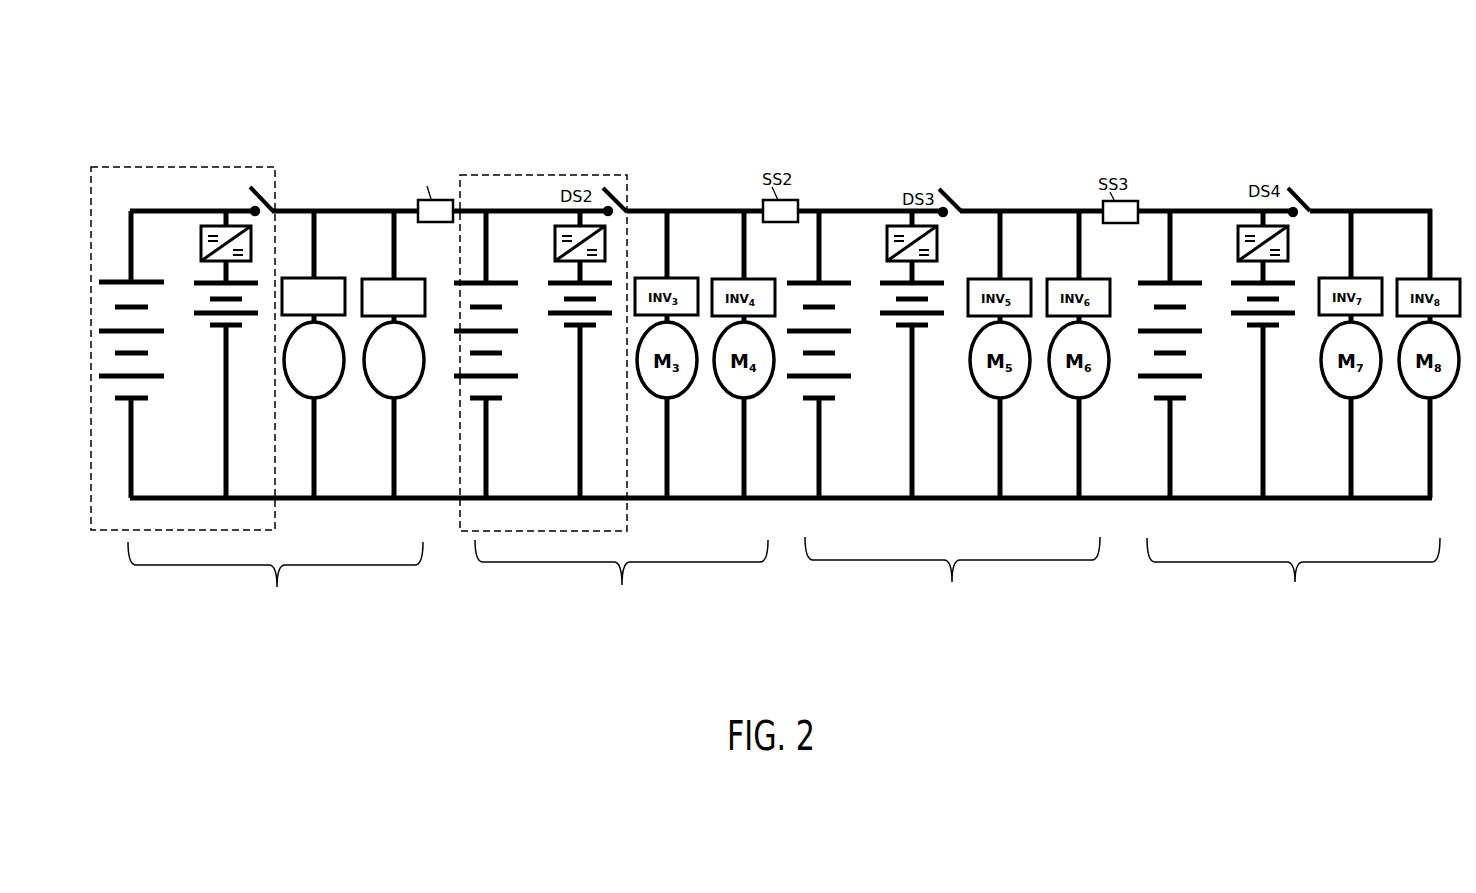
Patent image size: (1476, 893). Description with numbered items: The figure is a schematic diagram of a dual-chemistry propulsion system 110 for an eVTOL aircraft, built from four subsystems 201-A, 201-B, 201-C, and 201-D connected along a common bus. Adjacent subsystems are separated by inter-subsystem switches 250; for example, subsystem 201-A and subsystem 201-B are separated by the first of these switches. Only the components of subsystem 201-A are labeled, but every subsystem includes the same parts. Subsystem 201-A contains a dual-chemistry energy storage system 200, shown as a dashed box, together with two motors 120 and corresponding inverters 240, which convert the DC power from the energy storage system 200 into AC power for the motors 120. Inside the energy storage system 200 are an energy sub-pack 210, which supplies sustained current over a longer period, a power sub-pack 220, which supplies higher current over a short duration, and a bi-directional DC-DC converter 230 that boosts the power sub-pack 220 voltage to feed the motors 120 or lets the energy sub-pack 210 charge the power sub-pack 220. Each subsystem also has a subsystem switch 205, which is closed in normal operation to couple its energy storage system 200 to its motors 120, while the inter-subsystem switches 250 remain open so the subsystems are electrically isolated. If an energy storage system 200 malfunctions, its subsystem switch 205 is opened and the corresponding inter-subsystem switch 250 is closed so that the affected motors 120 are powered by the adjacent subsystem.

The dual-chemistry propulsion system 110 is at (1393, 104).
The motors 120 is at (377, 414).
The dual-chemistry energy storage system 200 is at (154, 167).
The subsystem 201-A is at (275, 584).
The subsystem 201-B is at (621, 585).
The subsystem 201-C is at (952, 580).
The subsystem 201-D is at (1293, 580).
The subsystem switch 205 is at (259, 181).
The energy sub-pack 210 is at (138, 408).
The power sub-pack 220 is at (214, 341).
The DC-DC converter 230 is at (203, 263).
The inverters 240 is at (376, 263).
The inter-subsystem switches 250 is at (423, 158).